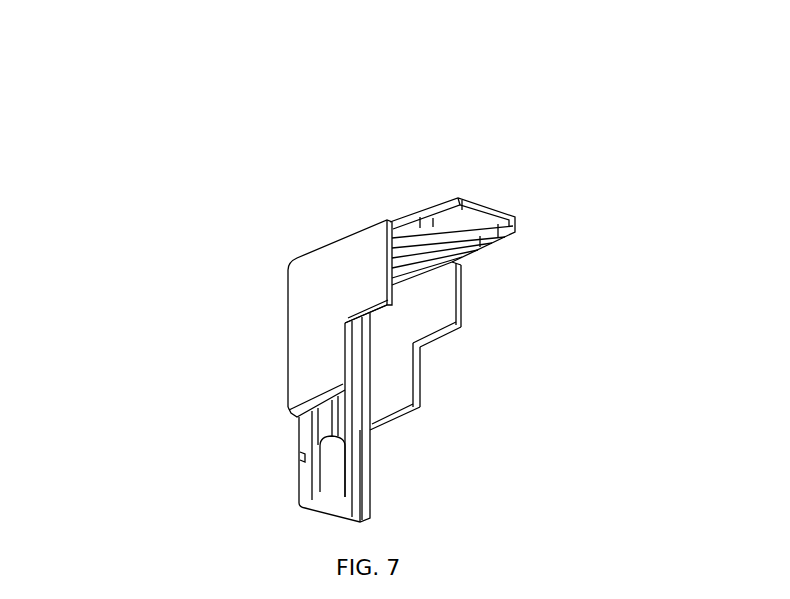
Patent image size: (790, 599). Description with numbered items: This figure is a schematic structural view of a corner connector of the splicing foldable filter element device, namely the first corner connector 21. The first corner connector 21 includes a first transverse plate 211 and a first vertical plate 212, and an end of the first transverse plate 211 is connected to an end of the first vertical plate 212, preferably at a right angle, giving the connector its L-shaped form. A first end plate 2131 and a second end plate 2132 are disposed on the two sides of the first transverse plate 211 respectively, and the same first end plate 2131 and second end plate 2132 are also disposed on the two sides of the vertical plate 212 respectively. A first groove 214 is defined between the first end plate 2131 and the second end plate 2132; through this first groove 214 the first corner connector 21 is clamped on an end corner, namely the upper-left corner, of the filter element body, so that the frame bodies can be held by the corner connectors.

The first corner connector 21 is at (460, 300).
The first transverse plate 211 is at (447, 203).
The first vertical plate 212 is at (333, 482).
The first groove 214 is at (330, 360).
The first end plate 2131 is at (413, 327).
The second end plate 2132 is at (335, 267).